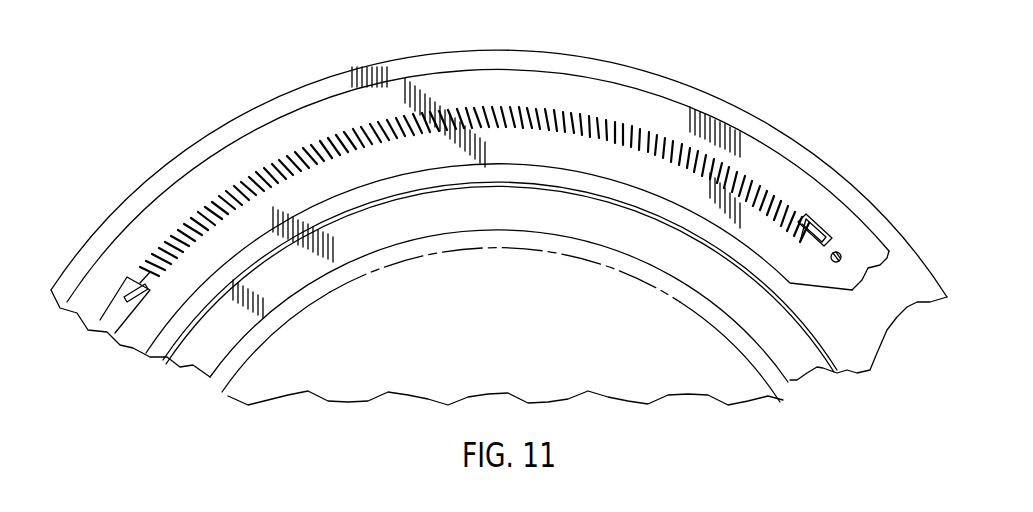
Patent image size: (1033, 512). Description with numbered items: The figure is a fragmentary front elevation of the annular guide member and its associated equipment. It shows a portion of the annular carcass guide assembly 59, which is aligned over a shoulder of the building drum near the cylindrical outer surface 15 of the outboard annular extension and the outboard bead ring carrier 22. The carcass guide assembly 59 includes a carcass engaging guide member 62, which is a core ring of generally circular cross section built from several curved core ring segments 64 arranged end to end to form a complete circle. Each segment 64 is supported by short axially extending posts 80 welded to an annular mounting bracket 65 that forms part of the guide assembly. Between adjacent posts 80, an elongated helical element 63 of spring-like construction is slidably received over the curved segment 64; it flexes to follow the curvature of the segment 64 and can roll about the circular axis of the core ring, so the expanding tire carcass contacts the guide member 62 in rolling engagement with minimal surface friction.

The cylindrical outer surface of outboard annular extension 15 is at (712, 392).
The outboard bead ring carrier 22 is at (227, 363).
The annular carcass guide assembly 59 is at (748, 108).
The carcass engaging guide member 62 is at (322, 140).
The elongated helical element 63 is at (140, 275).
The curved core ring segment 64 is at (266, 180).
The annular mounting bracket 65 is at (600, 76).
The axially extending post 80 is at (370, 128).